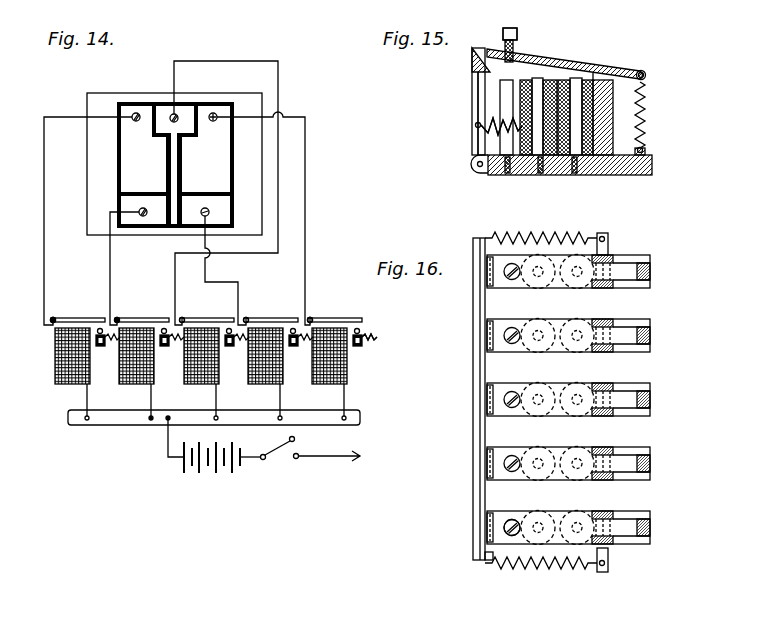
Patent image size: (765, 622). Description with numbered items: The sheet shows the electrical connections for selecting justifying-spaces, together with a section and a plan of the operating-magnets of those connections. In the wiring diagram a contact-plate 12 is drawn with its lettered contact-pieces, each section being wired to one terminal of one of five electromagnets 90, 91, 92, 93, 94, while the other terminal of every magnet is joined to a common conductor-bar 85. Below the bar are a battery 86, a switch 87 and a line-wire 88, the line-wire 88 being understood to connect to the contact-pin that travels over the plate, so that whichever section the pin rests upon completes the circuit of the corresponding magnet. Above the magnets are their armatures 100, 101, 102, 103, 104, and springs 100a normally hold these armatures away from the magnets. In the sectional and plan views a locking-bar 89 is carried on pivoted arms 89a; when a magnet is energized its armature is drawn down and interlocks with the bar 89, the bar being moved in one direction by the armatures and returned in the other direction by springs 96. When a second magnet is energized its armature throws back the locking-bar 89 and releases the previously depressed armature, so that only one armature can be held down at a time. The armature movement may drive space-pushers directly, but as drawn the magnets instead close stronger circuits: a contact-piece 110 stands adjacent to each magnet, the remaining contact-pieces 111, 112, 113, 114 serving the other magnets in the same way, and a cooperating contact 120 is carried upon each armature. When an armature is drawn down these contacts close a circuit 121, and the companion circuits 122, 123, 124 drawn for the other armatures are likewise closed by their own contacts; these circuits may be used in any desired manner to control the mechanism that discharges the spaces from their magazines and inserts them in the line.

In FIG. 14, the controller switch block 12 is at (174, 164).
In FIG. 14, the common conductor-bar 85 is at (104, 426).
In FIG. 14, the battery 86 is at (213, 453).
In FIG. 14, the switch 87 is at (278, 456).
In FIG. 14, the line-wire 88 is at (337, 462).
In FIG. 15, the locking-bar 89 is at (472, 55).
In FIG. 16, the locking-bar 89 is at (479, 368).
In FIG. 15, the pivoted arms 89a is at (479, 100).
In FIG. 14, the electromagnet 90 is at (72, 374).
In FIG. 15, the electromagnet 90 is at (508, 100).
In FIG. 14, the electromagnet 91 is at (136, 374).
In FIG. 14, the electromagnet 92 is at (201, 374).
In FIG. 14, the electromagnet 93 is at (265, 374).
In FIG. 14, the electromagnet 94 is at (329, 374).
In FIG. 15, the springs 96 is at (512, 122).
In FIG. 16, the springs 96 is at (516, 234).
In FIG. 14, the armature 100 is at (78, 313).
In FIG. 15, the armature 100 is at (572, 60).
In FIG. 16, the armature 100 is at (560, 514).
In FIG. 15, the springs 100a is at (645, 110).
In FIG. 14, the armature 101 is at (142, 313).
In FIG. 16, the armature 101 is at (560, 450).
In FIG. 14, the armature 102 is at (207, 313).
In FIG. 16, the armature 102 is at (560, 386).
In FIG. 14, the armature 103 is at (271, 313).
In FIG. 16, the armature 103 is at (560, 322).
In FIG. 14, the armature 104 is at (335, 313).
In FIG. 16, the armature 104 is at (552, 290).
In FIG. 14, the contact-piece 110 is at (106, 344).
In FIG. 15, the contact-piece 110 is at (494, 128).
In FIG. 14, the contact 111 is at (170, 344).
In FIG. 14, the contact 112 is at (235, 344).
In FIG. 14, the contact 113 is at (299, 344).
In FIG. 14, the contact 114 is at (363, 344).
In FIG. 14, the contact 120 is at (51, 319).
In FIG. 15, the contact 120 is at (503, 32).
In FIG. 16, the contact 120 is at (508, 529).
In FIG. 14, the circuit 121 is at (55, 318).
In FIG. 15, the circuit 121 is at (520, 31).
In FIG. 14, the conductor 122 is at (182, 318).
In FIG. 14, the conductor 123 is at (246, 318).
In FIG. 14, the conductor 124 is at (310, 318).